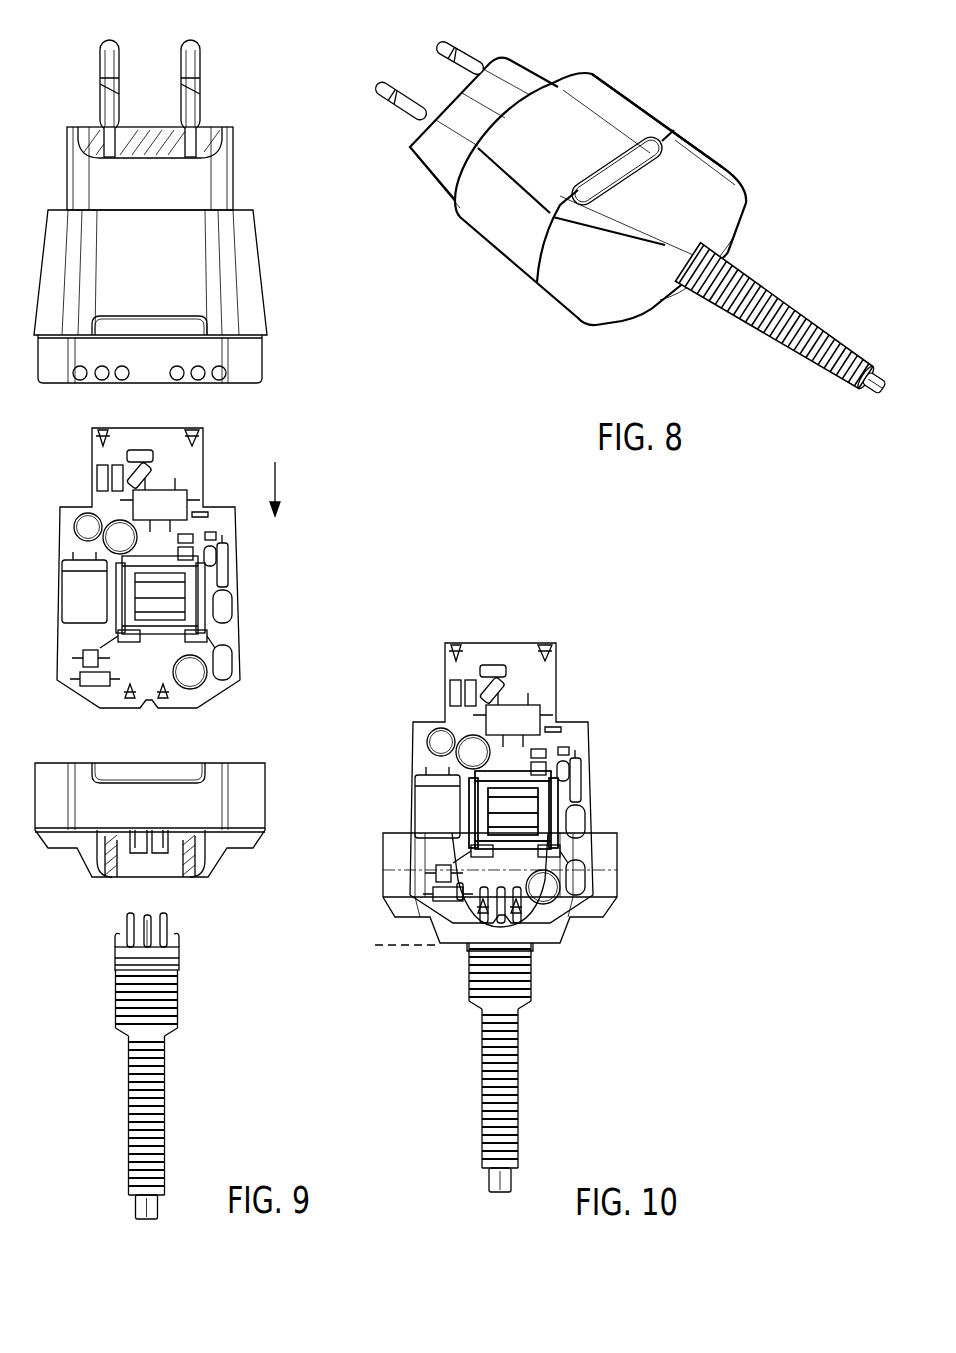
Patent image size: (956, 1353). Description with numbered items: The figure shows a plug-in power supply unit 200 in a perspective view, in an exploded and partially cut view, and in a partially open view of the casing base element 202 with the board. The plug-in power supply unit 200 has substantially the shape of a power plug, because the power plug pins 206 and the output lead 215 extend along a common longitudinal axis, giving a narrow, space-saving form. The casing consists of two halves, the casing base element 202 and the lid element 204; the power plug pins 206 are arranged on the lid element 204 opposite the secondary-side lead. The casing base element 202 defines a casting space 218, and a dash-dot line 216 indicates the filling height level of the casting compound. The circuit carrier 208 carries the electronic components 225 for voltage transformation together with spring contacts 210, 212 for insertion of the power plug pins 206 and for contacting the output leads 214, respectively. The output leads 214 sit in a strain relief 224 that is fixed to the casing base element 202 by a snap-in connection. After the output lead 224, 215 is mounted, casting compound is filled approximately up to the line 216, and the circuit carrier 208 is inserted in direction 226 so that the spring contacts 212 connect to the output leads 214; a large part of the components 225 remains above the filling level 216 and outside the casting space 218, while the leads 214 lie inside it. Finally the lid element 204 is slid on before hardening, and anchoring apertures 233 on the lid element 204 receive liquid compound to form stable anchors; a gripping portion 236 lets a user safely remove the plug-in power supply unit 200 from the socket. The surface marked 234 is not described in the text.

In FIG. 9, the plug-in power supply unit 200 is at (203, 629).
In FIG. 8, the plug-in power supply unit 200 is at (612, 239).
In FIG. 9, the casing base element 202 is at (253, 799).
In FIG. 8, the casing base element 202 is at (733, 175).
In FIG. 9, the lid element 204 is at (183, 215).
In FIG. 8, the lid element 204 is at (542, 182).
In FIG. 9, the power plug pins 206 is at (195, 63).
In FIG. 8, the power plug pins 206 is at (390, 102).
In FIG. 9, the circuit carrier 208 is at (182, 579).
In FIG. 10, the circuit carrier 208 is at (536, 783).
In FIG. 9, the spring contacts 210 is at (203, 440).
In FIG. 9, the spring contacts 212 is at (170, 694).
In FIG. 9, the output leads 214 is at (165, 914).
In FIG. 8, the output lead 215 is at (850, 390).
In FIG. 10, the dash-dot line 216 is at (603, 875).
In FIG. 10, the casting space 218 is at (375, 870).
In FIG. 9, the strain relief 224 is at (179, 1056).
In FIG. 10, the strain relief 224 is at (528, 998).
In FIG. 10, the components 225 is at (527, 807).
In FIG. 9, the insertion direction 226 is at (278, 480).
In FIG. 9, the anchoring apertures 233 is at (222, 373).
In FIG. 8, the housing side surface 234 is at (693, 130).
In FIG. 9, the gripping portion 236 is at (192, 326).
In FIG. 8, the gripping portion 236 is at (618, 165).